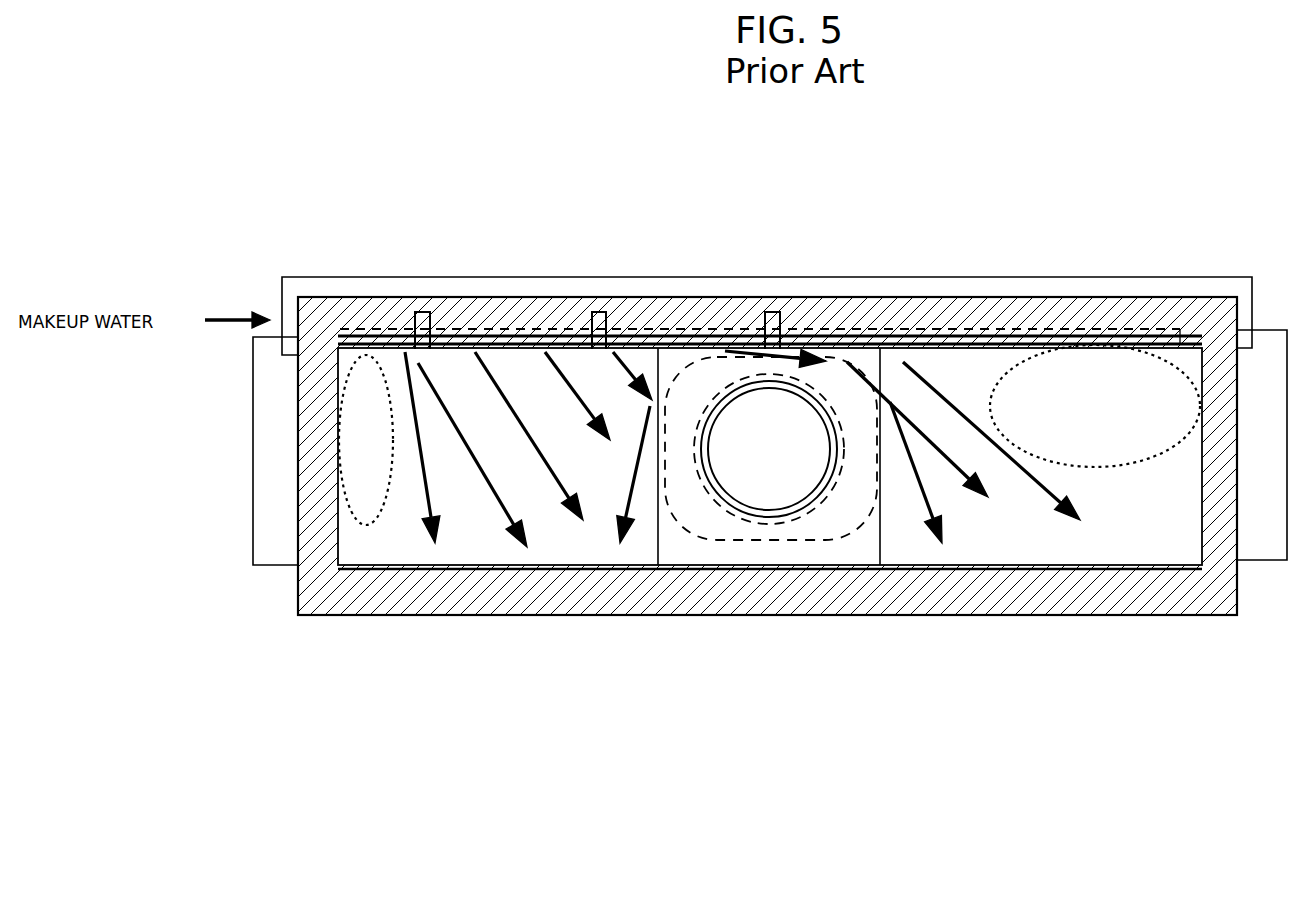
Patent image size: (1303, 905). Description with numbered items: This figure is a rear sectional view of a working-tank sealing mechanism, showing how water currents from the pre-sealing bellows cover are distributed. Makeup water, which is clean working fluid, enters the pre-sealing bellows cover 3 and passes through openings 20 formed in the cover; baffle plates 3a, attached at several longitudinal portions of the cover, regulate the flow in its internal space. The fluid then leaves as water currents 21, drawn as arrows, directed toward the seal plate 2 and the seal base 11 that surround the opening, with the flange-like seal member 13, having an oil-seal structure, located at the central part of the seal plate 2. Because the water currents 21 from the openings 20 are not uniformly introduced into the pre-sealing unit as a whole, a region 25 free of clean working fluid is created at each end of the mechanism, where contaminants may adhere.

The seal plate 2 is at (273, 568).
The pre-sealing bellows cover 3 is at (943, 272).
The baffle plates 3a is at (422, 312).
The seal base 11 is at (366, 623).
The seal member 13 is at (833, 528).
The openings 20 is at (1008, 334).
The water currents 21 is at (628, 513).
The region free of clean working fluid 25 is at (368, 448).